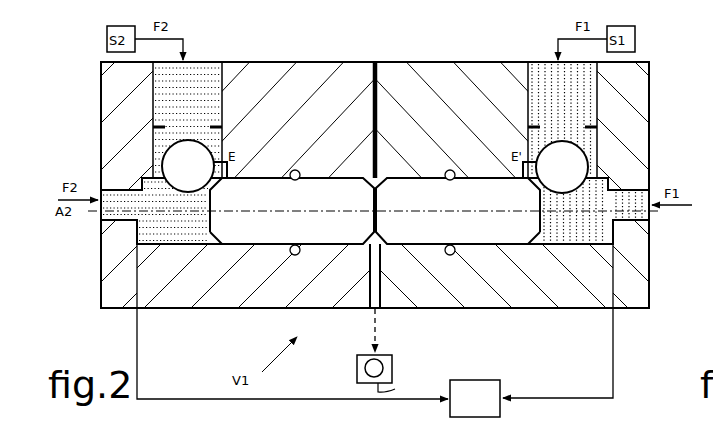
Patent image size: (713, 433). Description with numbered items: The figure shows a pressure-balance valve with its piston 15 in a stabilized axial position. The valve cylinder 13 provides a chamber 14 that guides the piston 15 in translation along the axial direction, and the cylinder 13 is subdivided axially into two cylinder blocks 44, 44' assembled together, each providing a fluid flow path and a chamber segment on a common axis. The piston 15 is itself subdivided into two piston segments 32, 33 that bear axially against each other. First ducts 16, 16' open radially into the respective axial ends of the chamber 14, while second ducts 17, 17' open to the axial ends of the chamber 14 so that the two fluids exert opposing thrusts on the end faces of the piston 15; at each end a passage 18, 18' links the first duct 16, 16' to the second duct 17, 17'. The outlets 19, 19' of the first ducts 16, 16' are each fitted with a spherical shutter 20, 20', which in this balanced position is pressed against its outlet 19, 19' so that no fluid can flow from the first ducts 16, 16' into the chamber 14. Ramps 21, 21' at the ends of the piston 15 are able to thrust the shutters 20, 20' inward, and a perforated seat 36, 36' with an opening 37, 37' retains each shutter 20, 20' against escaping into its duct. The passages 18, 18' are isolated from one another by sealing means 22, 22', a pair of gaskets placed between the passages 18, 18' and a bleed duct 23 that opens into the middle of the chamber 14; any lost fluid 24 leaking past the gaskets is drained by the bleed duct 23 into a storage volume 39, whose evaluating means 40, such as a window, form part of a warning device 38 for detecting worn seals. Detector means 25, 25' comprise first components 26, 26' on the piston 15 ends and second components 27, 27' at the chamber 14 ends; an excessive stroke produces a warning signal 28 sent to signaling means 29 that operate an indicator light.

The valve cylinder 13 is at (413, 62).
The chamber 14 is at (522, 256).
The piston 15 is at (252, 263).
The first duct 16 is at (206, 104).
The first duct 16' is at (546, 103).
The second duct 17 is at (145, 160).
The second duct 17' is at (612, 168).
The passage 18 is at (161, 282).
The passage 18' is at (588, 281).
The outlet 19 is at (115, 134).
The outlet 19' is at (642, 137).
The shutter 20 is at (188, 166).
The shutter 20' is at (562, 167).
The ramp 21 is at (249, 205).
The ramp 21' is at (493, 205).
The sealing means 22 is at (274, 190).
The sealing means 22' is at (474, 187).
The bleed duct 23 is at (392, 290).
The lost fluid 24 is at (360, 330).
The detector means 25 is at (146, 266).
The detector means 25' is at (598, 267).
The first component 26 is at (239, 237).
The first component 26' is at (505, 234).
The second component 27 is at (94, 242).
The second component 27' is at (650, 235).
The warning signal 28 is at (375, 321).
The signaling means 29 is at (484, 407).
The piston segment 32 is at (337, 246).
The piston segment 33 is at (409, 246).
The perforated seat 36 is at (144, 83).
The perforated seat 36' is at (562, 81).
The opening 37 is at (206, 120).
The opening 37' is at (586, 120).
The warning device 38 is at (396, 364).
The storage volume 39 is at (357, 370).
The means for evaluating 40 is at (395, 389).
The cylinder block 44 is at (224, 108).
The cylinder block 44' is at (507, 108).